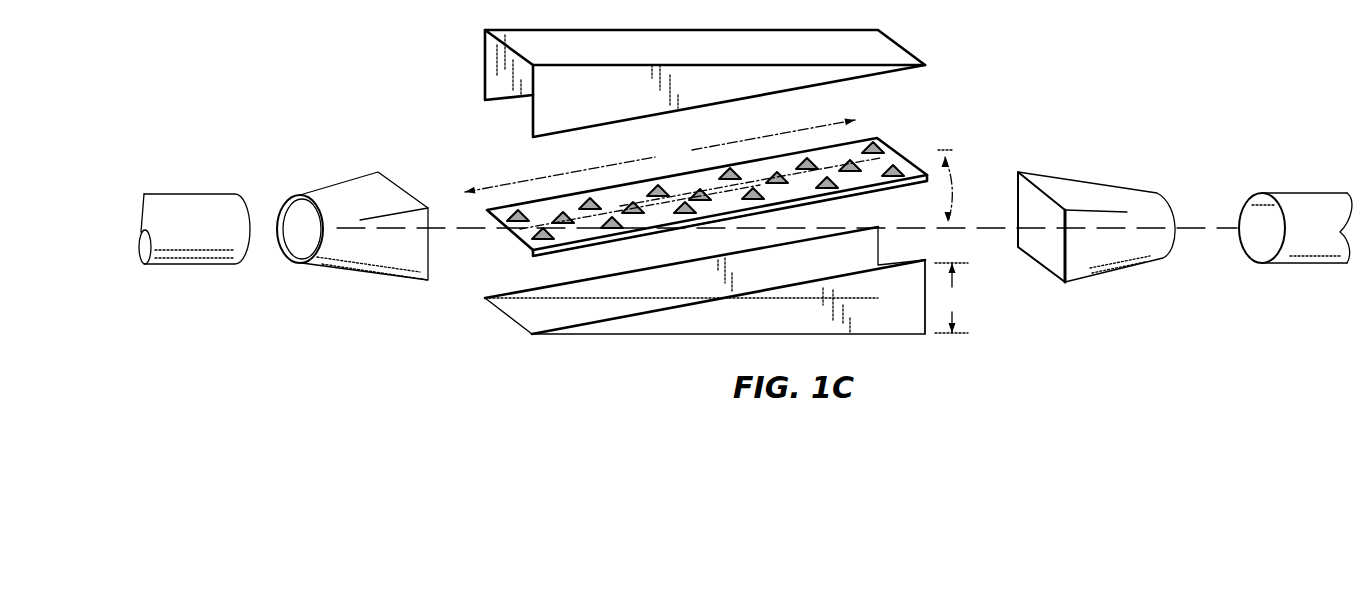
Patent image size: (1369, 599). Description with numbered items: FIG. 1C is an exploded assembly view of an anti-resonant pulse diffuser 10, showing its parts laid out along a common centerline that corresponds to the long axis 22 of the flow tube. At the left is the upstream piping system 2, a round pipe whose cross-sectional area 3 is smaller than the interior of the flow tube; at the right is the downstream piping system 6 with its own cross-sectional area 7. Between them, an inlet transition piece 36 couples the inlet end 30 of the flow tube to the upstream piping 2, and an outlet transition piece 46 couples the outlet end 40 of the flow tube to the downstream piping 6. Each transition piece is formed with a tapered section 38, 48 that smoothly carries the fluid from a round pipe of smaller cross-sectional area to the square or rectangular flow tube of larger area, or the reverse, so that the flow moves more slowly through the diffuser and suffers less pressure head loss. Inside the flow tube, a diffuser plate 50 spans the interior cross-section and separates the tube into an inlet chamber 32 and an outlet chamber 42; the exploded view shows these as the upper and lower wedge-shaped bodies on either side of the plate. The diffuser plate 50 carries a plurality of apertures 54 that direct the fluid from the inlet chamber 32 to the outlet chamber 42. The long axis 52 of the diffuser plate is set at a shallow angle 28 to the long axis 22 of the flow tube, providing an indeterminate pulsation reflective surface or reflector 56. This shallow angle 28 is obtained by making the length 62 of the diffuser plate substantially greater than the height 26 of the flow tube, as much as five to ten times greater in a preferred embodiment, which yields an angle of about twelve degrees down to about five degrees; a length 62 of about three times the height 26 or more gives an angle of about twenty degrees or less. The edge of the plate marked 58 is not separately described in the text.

The upstream piping system 2 is at (200, 195).
The cross-sectional area of the inlet piping 3 is at (145, 251).
The downstream piping system 6 is at (1299, 265).
The cross-sectional area of the downstream piping 7 is at (1268, 239).
The anti-resonant pulse diffuser 10 is at (336, 65).
The long axis of the flow tube 22 is at (1188, 229).
The height of the flow tube 26 is at (953, 298).
The shallow angle 28 is at (953, 176).
The inlet end 30 is at (470, 318).
The inlet chamber 32 is at (484, 72).
The inlet transition piece 36 is at (340, 180).
The tapered section of the inlet transition piece 38 is at (362, 278).
The outlet end 40 is at (928, 308).
The outlet chamber 42 is at (905, 247).
The outlet transition piece 46 is at (1093, 181).
The tapered section of the outlet transition piece 48 is at (1105, 276).
The diffuser plate 50 is at (533, 198).
The long axis of the diffuser plate 52 is at (915, 152).
The apertures 54 is at (734, 165).
The pulsation reflective surface 56 is at (780, 168).
The plate front edge 58 is at (782, 205).
The length of the diffuser plate 62 is at (660, 155).